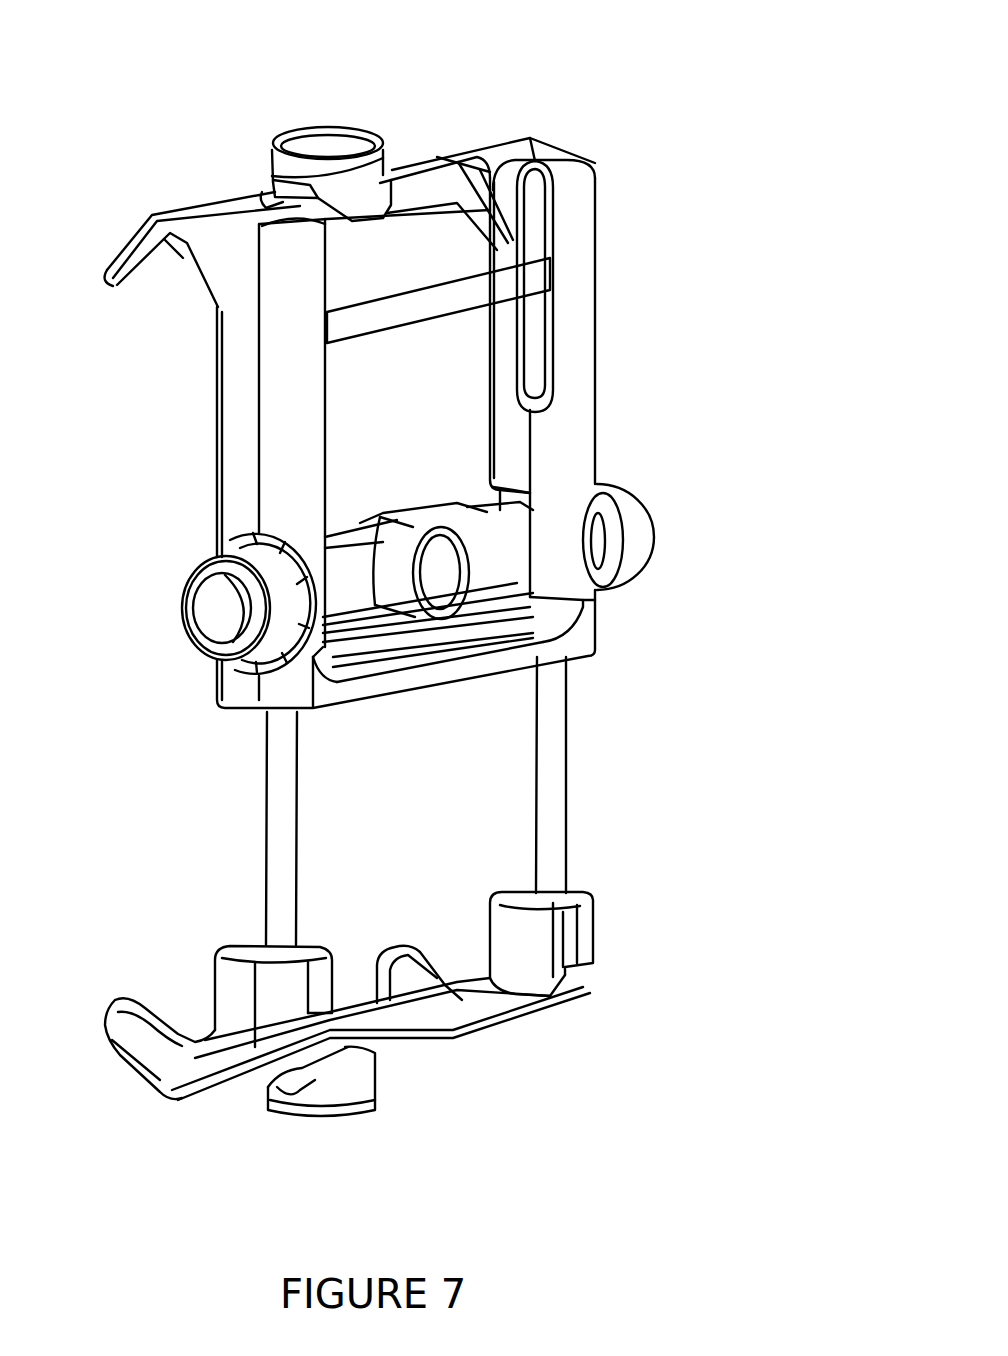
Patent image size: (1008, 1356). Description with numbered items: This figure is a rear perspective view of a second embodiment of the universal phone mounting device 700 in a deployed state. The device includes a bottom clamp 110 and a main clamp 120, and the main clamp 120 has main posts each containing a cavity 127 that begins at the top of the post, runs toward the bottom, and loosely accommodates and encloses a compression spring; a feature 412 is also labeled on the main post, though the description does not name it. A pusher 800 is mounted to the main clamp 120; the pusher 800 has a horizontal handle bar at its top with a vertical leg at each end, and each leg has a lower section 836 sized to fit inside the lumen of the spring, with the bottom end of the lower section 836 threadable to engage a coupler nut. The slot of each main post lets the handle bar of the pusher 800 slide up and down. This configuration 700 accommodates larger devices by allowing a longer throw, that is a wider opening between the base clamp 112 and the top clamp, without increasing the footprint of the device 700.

The universal phone mounting device 700 is at (752, 74).
The cavity 127 is at (560, 150).
The slot 412 is at (535, 223).
The pusher 800 is at (447, 315).
The main clamp 120 is at (240, 460).
The lower section 836 is at (288, 797).
The bottom clamp 110 is at (597, 965).
The base clamp 112 is at (157, 1083).